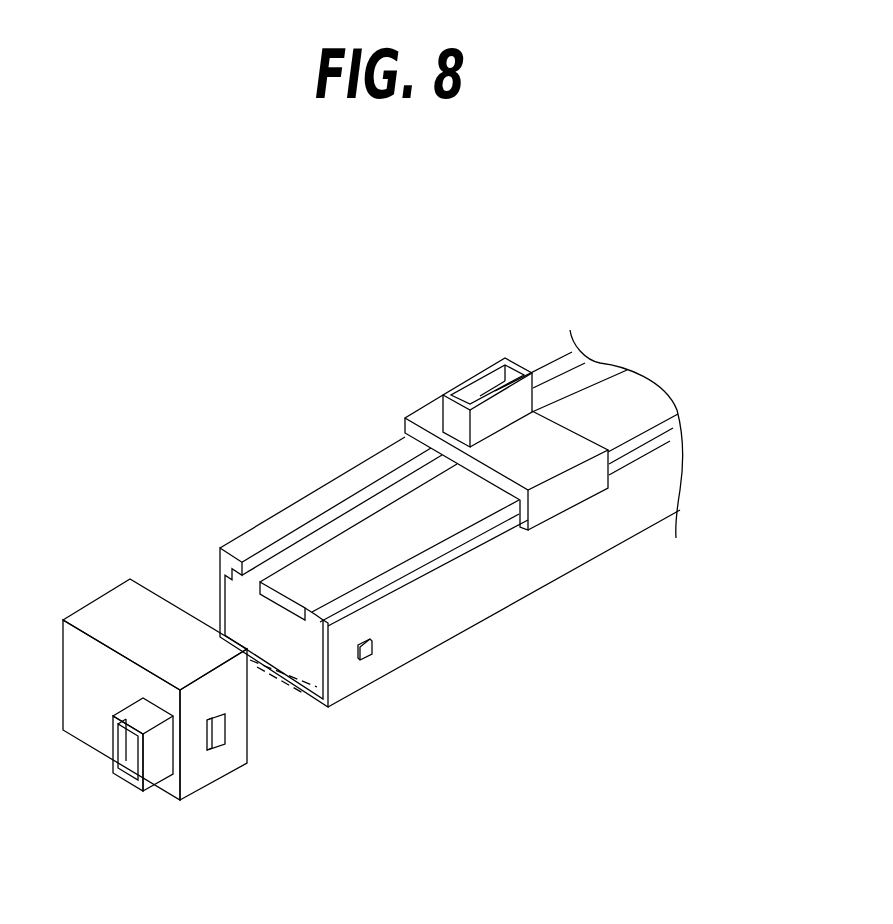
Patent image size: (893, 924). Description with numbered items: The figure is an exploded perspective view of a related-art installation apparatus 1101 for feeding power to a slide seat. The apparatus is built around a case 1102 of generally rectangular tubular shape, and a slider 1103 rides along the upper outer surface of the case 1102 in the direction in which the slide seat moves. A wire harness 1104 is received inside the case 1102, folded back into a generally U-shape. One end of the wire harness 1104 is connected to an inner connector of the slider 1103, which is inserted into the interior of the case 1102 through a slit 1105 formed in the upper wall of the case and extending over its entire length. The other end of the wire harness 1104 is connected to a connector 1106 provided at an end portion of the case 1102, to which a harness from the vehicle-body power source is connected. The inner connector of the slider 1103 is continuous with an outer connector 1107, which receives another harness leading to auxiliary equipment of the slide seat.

The installation apparatus 1101 is at (344, 363).
The case 1102 is at (528, 597).
The slider 1103 is at (582, 508).
The wire harness 1104 is at (263, 693).
The slit 1105 is at (300, 544).
The connector 1106 is at (122, 780).
The outer connector 1107 is at (483, 358).